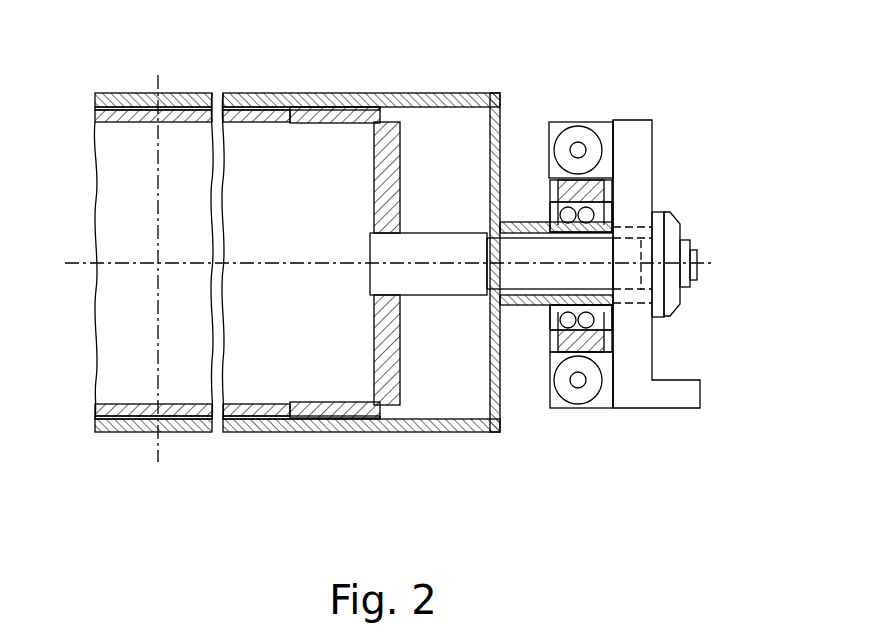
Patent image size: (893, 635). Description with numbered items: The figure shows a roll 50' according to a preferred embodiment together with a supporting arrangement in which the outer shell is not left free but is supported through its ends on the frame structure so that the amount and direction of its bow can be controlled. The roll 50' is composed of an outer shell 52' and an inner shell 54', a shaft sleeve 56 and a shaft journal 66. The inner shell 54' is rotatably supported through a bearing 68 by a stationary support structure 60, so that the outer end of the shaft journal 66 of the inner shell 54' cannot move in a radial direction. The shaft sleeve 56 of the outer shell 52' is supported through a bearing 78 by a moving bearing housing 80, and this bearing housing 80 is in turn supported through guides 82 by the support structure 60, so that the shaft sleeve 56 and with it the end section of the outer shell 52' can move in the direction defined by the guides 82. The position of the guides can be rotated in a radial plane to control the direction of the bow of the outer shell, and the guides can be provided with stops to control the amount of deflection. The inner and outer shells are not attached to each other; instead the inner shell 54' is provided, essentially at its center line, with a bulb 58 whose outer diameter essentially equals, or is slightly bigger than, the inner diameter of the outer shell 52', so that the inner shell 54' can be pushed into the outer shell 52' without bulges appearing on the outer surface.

The roll 50' is at (297, 222).
The outer shell 52' is at (297, 222).
The inner shell 54' is at (247, 313).
The shaft sleeve 56 is at (520, 222).
The bulb 58 is at (153, 423).
The support structure 60 is at (640, 347).
The shaft journal 66 is at (542, 272).
The bearing 68 is at (677, 208).
The bearing 78 is at (585, 205).
The bearing housing 80 is at (590, 165).
The guides 82 is at (610, 413).